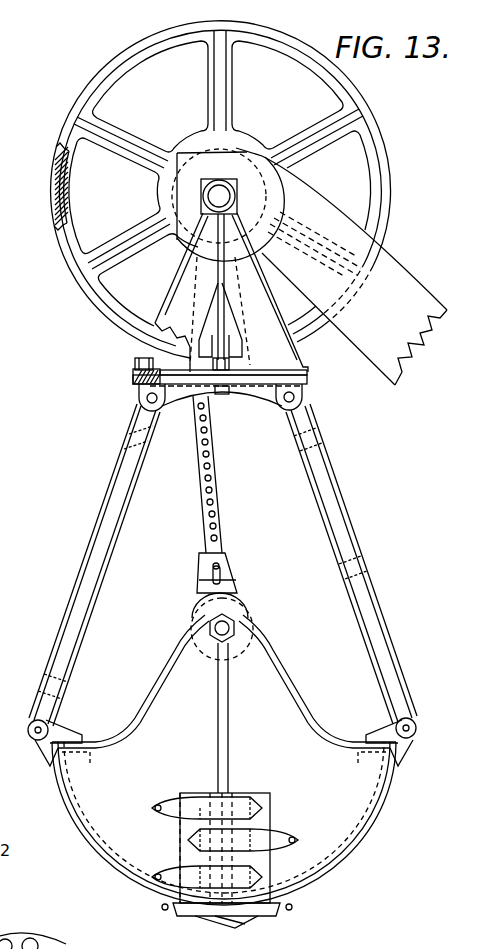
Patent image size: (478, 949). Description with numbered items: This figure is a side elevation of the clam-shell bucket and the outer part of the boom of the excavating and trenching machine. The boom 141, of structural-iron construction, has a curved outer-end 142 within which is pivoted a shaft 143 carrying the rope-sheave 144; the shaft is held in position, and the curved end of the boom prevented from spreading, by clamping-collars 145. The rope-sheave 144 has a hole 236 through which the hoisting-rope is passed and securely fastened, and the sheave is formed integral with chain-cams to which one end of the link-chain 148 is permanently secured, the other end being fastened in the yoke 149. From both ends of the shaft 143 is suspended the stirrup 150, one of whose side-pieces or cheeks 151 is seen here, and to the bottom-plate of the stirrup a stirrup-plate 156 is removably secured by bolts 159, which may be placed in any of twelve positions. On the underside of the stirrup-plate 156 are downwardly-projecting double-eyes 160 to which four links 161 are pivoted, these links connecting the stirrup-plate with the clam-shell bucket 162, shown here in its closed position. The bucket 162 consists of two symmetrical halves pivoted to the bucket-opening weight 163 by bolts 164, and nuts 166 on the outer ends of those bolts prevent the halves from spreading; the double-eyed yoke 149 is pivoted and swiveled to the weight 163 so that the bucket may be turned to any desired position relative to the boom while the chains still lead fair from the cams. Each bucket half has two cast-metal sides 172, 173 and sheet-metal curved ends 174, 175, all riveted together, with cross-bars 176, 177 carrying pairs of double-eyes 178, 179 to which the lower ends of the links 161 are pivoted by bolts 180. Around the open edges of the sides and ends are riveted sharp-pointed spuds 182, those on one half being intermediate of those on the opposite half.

The boom 141 is at (341, 266).
The curved outer-end 142 is at (251, 147).
The shaft 143 is at (237, 196).
The rope-sheave 144 is at (392, 190).
The clamping-collars 145 is at (236, 186).
The link-chain 148 is at (214, 489).
The yoke 149 is at (237, 575).
The stirrup 150 is at (175, 285).
The side-piece or cheek 151 is at (226, 289).
The stirrup-plate 156 is at (135, 381).
The bolts 159 is at (235, 355).
The double-eyes 160 is at (140, 400).
The links 161 is at (97, 531).
The clam-shell bucket 162 is at (224, 771).
The bucket-opening weight 163 is at (246, 604).
The bolts 164 is at (246, 636).
The nuts 166 is at (202, 638).
The cast-metal side 172 is at (274, 840).
The cast-metal side 173 is at (136, 827).
The sheet-metal curved end 174 is at (357, 845).
The sheet-metal curved end 175 is at (138, 823).
The cross-bar 176 is at (45, 748).
The cross-bar 177 is at (406, 746).
The double-eyes 178 is at (57, 728).
The double-eyes 179 is at (392, 725).
The bolts 180 is at (30, 728).
The spuds 182 is at (277, 830).
The hole 236 is at (58, 202).